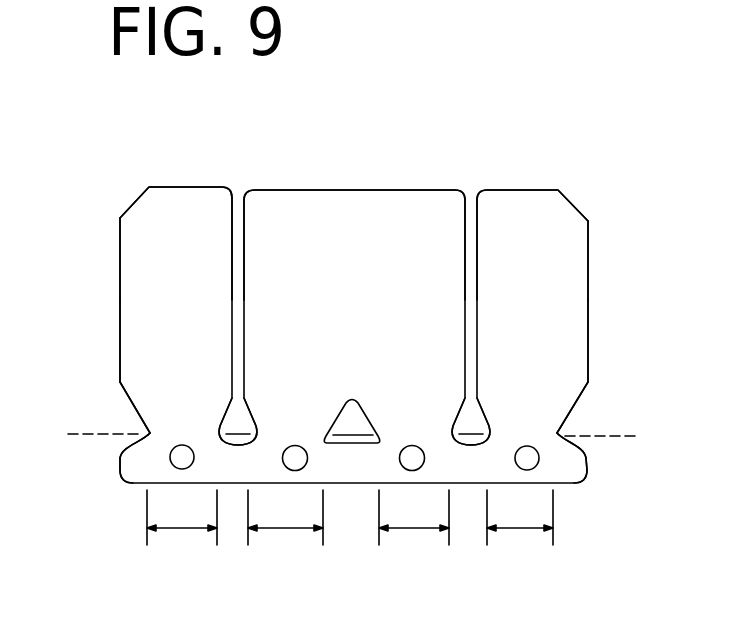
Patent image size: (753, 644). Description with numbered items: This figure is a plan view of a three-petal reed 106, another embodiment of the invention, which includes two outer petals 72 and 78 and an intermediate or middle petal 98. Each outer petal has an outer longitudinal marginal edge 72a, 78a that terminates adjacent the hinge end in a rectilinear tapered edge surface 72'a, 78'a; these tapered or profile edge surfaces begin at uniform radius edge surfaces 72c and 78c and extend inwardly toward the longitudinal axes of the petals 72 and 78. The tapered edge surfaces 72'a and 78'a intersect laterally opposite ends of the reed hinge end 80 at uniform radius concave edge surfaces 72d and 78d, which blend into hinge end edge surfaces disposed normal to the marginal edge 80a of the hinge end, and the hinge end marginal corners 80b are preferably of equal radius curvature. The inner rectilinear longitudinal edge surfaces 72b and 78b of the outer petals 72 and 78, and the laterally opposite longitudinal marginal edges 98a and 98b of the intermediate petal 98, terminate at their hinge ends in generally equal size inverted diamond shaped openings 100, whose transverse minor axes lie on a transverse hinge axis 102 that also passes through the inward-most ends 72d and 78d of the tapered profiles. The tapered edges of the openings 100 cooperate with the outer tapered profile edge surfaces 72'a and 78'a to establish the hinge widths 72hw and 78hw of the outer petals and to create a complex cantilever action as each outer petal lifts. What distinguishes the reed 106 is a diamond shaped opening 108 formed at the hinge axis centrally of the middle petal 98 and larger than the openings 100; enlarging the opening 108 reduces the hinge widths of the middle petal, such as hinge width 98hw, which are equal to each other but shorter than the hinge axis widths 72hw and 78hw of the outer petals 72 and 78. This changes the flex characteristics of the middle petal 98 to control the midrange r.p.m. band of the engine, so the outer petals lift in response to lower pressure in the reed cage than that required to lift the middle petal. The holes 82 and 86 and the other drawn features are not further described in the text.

The reed 106 is at (114, 176).
The outer petal 72 is at (176, 178).
The outer longitudinal marginal edge 72a is at (120, 258).
The inner rectilinear longitudinal edge surface 72b is at (233, 200).
The uniform radius edge surface 72c is at (120, 382).
The tapered edge surface 72'a is at (100, 407).
The uniform radius concave edge surface 72d is at (122, 460).
The hinge width 72hw is at (178, 528).
The intermediate petal 98 is at (333, 190).
The longitudinal marginal edge 98a is at (244, 237).
The longitudinal marginal edge 98b is at (465, 200).
The hinge width 98hw is at (283, 528).
The outer petal 78 is at (532, 181).
The outer longitudinal marginal edge 78a is at (588, 243).
The inner rectilinear longitudinal edge surface 78b is at (476, 207).
The uniform radius edge surface 78c is at (588, 383).
The tapered edge surface 78'a is at (599, 409).
The uniform radius concave edge surface 78d is at (563, 442).
The hinge width 78hw is at (517, 528).
The reed hinge end 80 is at (274, 483).
The marginal edge 80a is at (388, 483).
The hinge end marginal corner 80b is at (127, 483).
The mounting hole 82 is at (178, 462).
The lower right corner of base 86 is at (582, 478).
The diamond shaped opening 100 is at (237, 445).
The transverse hinge axis 102 is at (93, 438).
The diamond shaped opening 108 is at (349, 445).